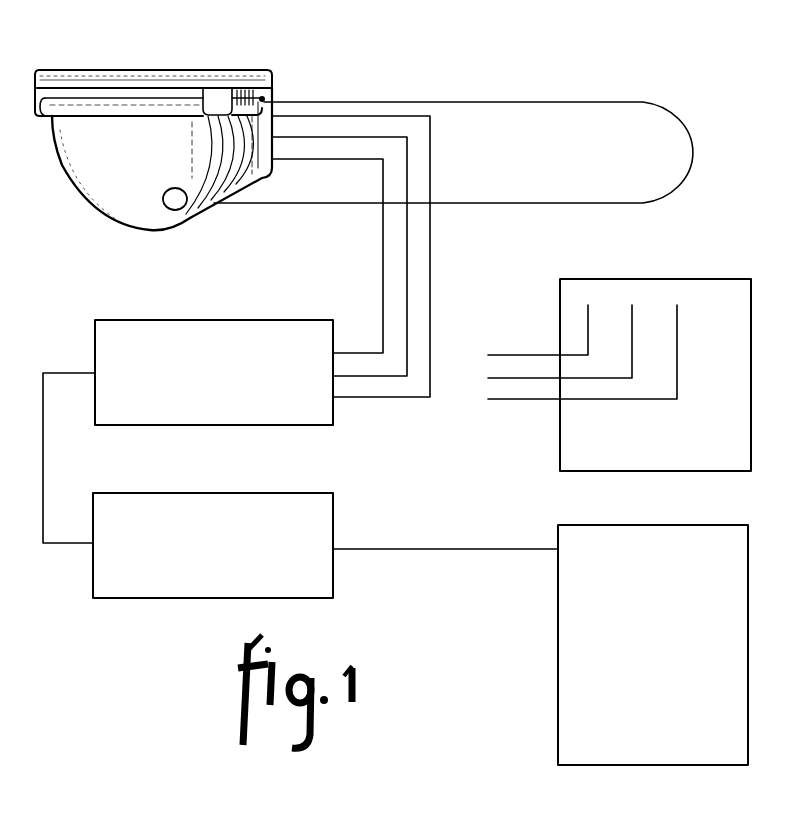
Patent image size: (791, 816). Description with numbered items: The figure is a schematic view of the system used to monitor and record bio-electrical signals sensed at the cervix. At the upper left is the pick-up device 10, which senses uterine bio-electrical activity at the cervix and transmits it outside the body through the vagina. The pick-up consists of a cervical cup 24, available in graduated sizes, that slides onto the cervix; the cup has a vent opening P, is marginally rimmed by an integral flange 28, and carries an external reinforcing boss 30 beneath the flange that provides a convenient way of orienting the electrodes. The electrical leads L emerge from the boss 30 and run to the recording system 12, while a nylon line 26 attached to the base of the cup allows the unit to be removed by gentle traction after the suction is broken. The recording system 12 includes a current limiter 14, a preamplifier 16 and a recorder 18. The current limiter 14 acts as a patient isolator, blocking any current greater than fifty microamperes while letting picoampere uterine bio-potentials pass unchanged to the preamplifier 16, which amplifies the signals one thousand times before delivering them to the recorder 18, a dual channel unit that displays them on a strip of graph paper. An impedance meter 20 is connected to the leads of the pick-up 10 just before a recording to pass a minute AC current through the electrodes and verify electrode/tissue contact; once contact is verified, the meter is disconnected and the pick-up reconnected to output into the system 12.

The pick-up device 10 is at (244, 49).
The recording system 12 is at (495, 595).
The current limiter 14 is at (218, 330).
The preamplifier 16 is at (211, 507).
The recorder 18 is at (627, 541).
The impedance meter 20 is at (667, 292).
The cervical cup 24 is at (85, 170).
The nylon line 26 is at (445, 102).
The integral flange 28 is at (149, 78).
The external reinforcing boss 30 is at (254, 147).
The electrical leads L is at (431, 263).
The vent opening P is at (173, 203).